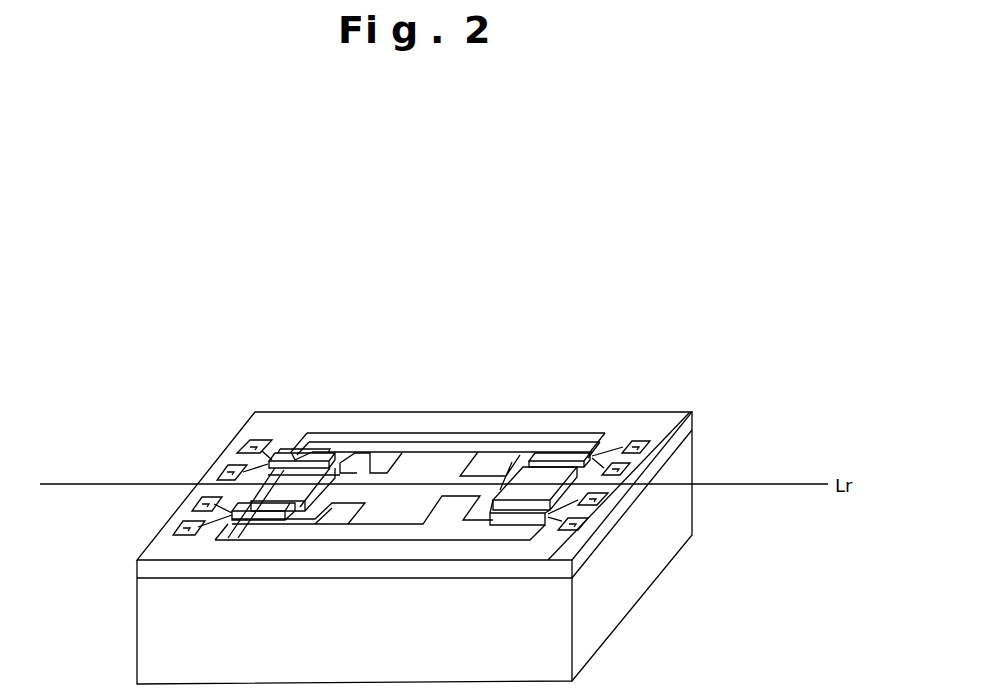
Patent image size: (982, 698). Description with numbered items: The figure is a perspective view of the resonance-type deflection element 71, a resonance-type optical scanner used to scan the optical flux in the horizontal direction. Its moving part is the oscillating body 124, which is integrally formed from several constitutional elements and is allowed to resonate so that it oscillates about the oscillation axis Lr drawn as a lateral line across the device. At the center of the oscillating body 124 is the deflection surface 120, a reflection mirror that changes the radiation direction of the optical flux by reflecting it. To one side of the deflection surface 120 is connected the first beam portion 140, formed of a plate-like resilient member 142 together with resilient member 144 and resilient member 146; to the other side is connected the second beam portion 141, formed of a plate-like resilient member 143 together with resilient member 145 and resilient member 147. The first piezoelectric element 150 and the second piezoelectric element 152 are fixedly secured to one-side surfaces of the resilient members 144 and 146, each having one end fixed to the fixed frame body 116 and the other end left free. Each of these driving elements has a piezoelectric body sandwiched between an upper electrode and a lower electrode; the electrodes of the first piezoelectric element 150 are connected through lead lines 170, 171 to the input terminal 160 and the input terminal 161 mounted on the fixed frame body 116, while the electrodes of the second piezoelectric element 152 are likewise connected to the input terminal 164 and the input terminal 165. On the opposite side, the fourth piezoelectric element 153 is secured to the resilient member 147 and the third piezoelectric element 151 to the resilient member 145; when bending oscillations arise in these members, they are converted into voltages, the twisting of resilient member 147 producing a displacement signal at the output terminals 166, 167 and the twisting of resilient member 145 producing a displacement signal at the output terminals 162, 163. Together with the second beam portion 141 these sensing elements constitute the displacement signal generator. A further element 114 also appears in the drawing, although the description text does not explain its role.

The resonance-type deflection element 71 is at (504, 263).
The substrate layer 114 is at (387, 465).
The fixed frame body 116 is at (608, 428).
The deflection surface 120 is at (422, 473).
The oscillating body 124 is at (438, 531).
The first beam portion 140 is at (462, 513).
The second beam portion 141 is at (325, 522).
The plate-like resilient member 142 is at (478, 455).
The plate-like resilient member 143 is at (365, 473).
The resilient member 144 is at (525, 453).
The resilient member 145 is at (287, 521).
The resilient member 146 is at (520, 522).
The resilient member 147 is at (280, 458).
The first piezoelectric element 150 is at (562, 467).
The third piezoelectric element 151 is at (253, 508).
The second piezoelectric element 152 is at (498, 518).
The fourth piezoelectric element 153 is at (312, 455).
The input terminal 160 is at (648, 446).
The input terminal 161 is at (635, 473).
The output terminal 162 is at (182, 519).
The output terminal 163 is at (200, 497).
The input terminal 164 is at (607, 495).
The input terminal 165 is at (590, 520).
The output terminal 166 is at (257, 443).
The output terminal 167 is at (223, 460).
The lead line 170 is at (603, 443).
The lead line 171 is at (600, 473).